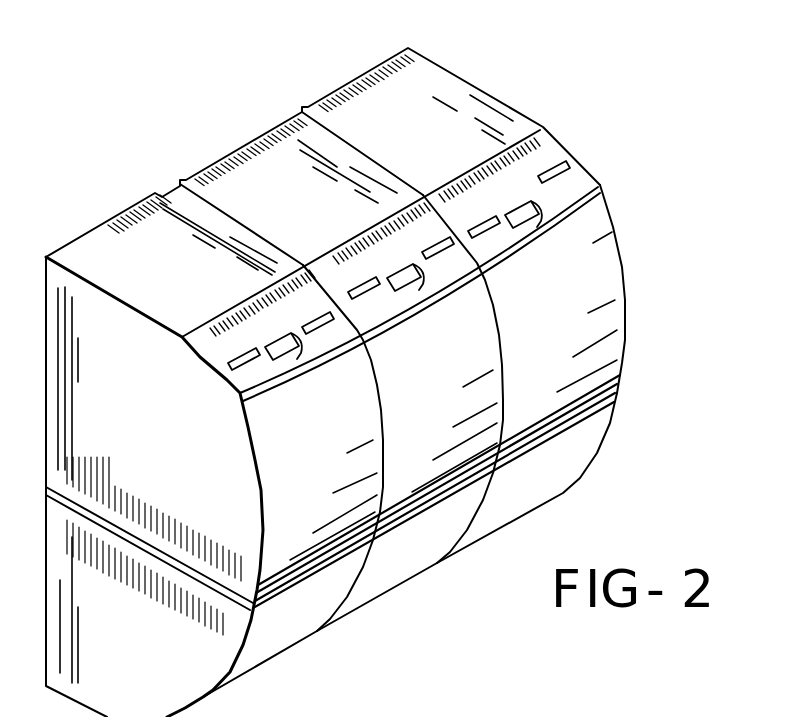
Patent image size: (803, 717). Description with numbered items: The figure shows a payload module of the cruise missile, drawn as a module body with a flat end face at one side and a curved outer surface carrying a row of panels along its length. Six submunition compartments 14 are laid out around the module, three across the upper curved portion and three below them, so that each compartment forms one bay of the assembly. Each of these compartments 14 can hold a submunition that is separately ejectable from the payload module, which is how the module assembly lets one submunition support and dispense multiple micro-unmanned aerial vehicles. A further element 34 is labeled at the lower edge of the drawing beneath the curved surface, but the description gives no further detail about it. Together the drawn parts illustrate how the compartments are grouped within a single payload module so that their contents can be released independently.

The submunition compartments 14 is at (439, 444).
The base 34 is at (552, 715).